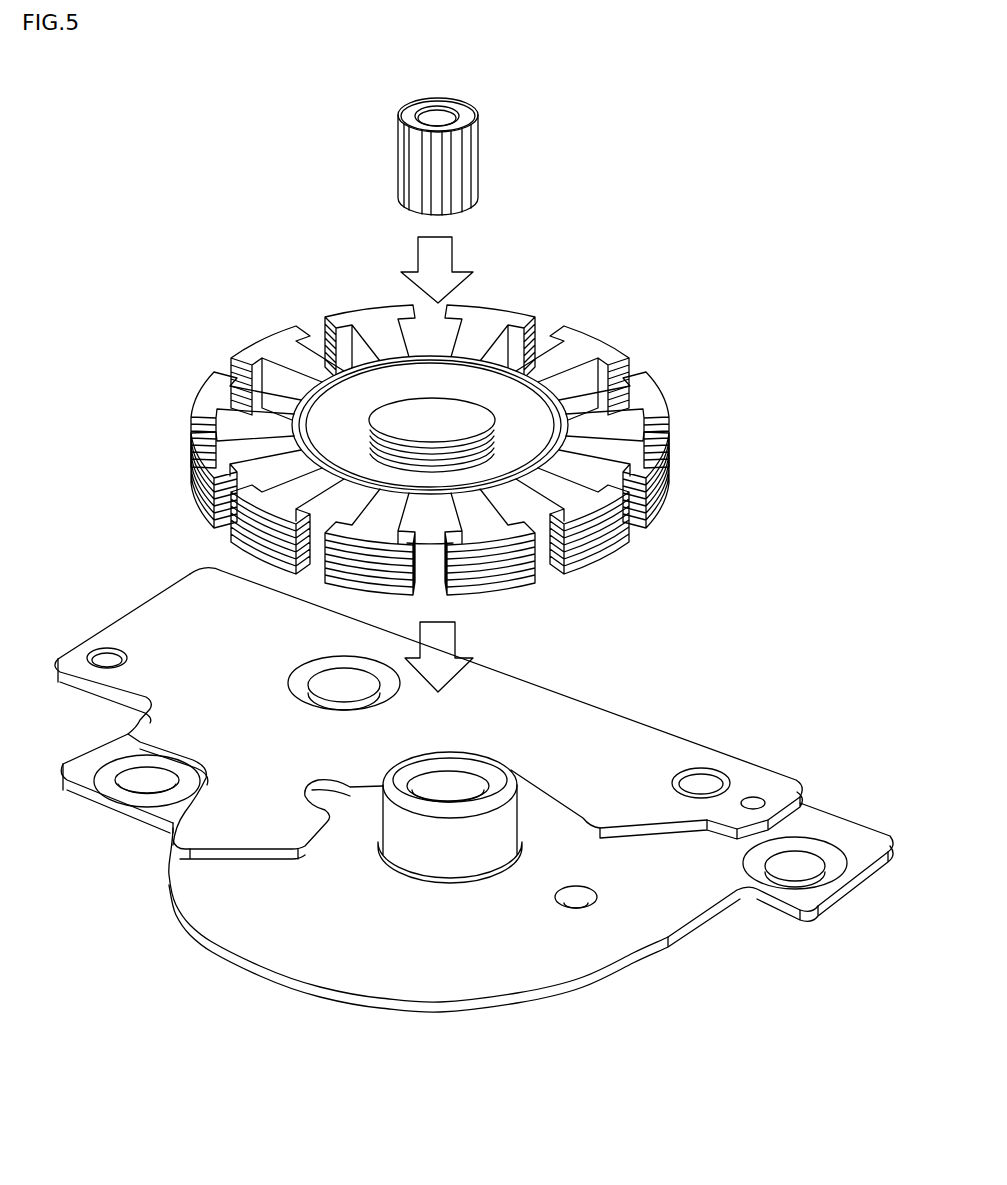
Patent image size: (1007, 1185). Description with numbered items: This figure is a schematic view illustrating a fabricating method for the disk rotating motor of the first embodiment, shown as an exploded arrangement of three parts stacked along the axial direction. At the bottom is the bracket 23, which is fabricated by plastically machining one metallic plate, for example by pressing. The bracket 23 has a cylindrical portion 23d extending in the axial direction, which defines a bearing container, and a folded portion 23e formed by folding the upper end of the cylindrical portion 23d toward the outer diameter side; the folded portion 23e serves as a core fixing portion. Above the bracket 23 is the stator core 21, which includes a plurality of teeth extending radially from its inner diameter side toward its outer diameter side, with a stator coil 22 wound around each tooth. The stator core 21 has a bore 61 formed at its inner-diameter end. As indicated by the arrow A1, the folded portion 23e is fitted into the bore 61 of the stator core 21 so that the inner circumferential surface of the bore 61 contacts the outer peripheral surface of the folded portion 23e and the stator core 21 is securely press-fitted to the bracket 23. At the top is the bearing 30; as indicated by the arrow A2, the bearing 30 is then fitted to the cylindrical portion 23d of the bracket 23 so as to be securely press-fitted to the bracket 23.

The stator core 21 is at (464, 423).
The stator coil 22 is at (627, 392).
The bracket 23 is at (474, 790).
The cylindrical portion 23d is at (473, 783).
The folded portion 23e is at (454, 817).
The bearing 30 is at (462, 160).
The bore 61 is at (415, 413).
The arrow A1 is at (447, 640).
The arrow A2 is at (443, 252).